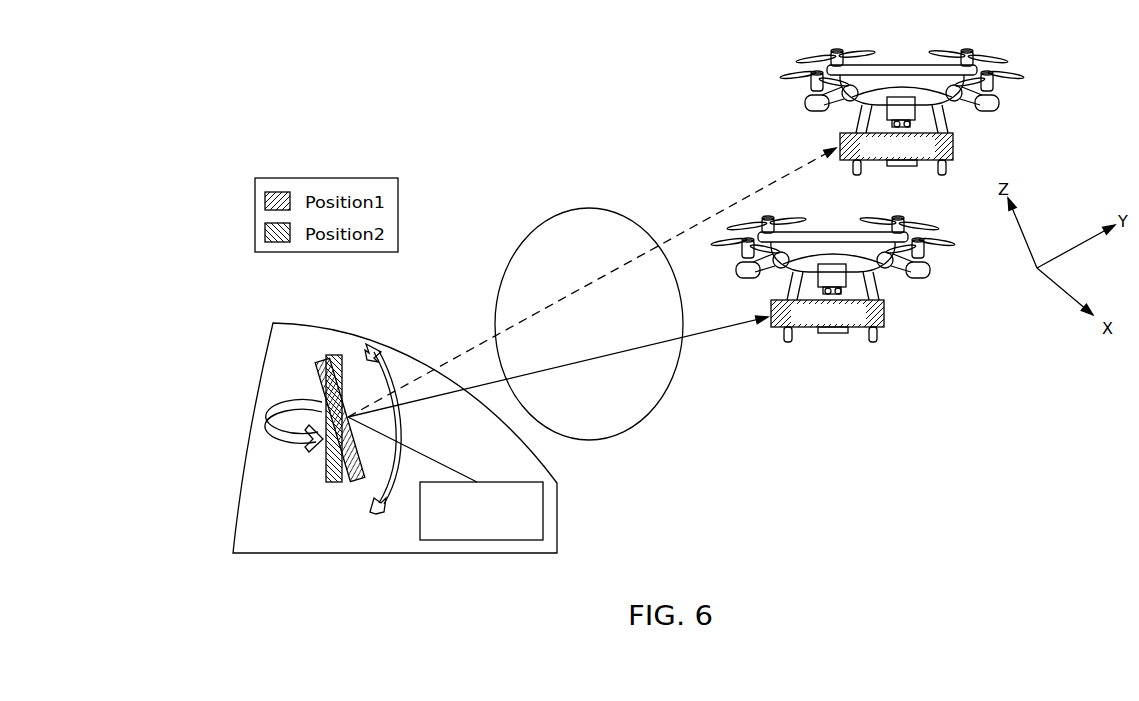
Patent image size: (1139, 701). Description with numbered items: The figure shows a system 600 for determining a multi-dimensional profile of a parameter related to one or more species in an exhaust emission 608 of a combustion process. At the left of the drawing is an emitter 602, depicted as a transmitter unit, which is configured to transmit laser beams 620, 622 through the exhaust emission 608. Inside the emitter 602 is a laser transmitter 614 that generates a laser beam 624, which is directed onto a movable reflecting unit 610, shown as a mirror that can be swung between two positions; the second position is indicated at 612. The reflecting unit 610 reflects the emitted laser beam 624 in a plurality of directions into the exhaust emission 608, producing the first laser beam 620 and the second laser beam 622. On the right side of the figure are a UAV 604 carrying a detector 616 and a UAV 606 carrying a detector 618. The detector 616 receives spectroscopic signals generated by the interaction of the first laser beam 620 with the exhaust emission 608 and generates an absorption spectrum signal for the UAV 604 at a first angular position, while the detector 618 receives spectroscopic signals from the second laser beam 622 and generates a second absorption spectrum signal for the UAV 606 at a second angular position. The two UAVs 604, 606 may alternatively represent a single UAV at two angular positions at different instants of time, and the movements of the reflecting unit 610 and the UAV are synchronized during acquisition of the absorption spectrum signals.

The system 600 is at (297, 80).
The emitter 602 is at (273, 330).
The UAV 604 is at (902, 95).
The UAV 606 is at (833, 261).
The exhaust emission 608 is at (545, 222).
The reflecting unit 610 is at (322, 378).
The mirror in second position 612 is at (325, 472).
The laser transmitter 614 is at (543, 513).
The detector 616 is at (930, 146).
The detector 618 is at (862, 312).
The laser beam 620 is at (528, 318).
The laser beam 622 is at (628, 352).
The laser beam 624 is at (410, 457).